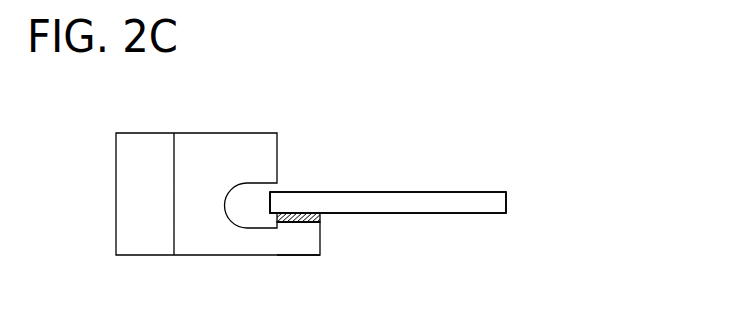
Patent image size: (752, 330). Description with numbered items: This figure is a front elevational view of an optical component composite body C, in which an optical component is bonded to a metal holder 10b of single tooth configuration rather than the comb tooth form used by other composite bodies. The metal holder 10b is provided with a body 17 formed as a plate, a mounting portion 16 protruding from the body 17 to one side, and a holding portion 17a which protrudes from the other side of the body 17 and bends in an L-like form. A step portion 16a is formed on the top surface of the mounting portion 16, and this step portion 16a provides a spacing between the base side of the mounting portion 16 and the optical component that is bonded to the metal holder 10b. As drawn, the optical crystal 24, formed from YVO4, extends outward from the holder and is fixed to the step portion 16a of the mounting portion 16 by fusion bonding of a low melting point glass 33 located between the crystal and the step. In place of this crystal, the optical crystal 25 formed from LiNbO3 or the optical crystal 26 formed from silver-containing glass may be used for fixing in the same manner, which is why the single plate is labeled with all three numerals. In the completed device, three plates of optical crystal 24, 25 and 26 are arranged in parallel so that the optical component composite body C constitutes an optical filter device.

The optical component composite body C is at (306, 99).
The metal holder 10b is at (95, 194).
The holding portion 17a is at (145, 248).
The body 17 is at (230, 243).
The mounting portion 16 is at (300, 243).
The step portion 16a is at (323, 225).
The optical crystal 24 is at (506, 204).
The optical crystal 25 is at (388, 202).
The optical crystal 26 is at (388, 202).
The low melting point glass 33 is at (303, 213).